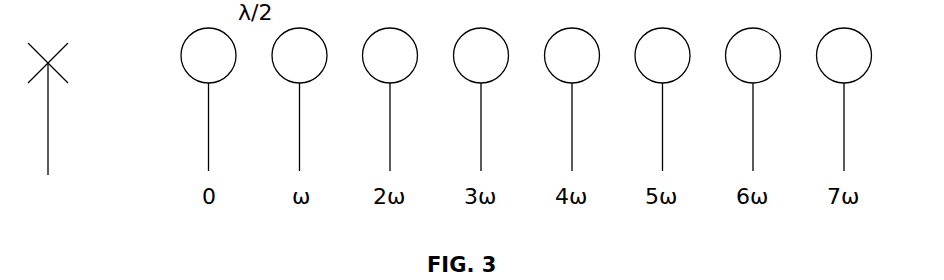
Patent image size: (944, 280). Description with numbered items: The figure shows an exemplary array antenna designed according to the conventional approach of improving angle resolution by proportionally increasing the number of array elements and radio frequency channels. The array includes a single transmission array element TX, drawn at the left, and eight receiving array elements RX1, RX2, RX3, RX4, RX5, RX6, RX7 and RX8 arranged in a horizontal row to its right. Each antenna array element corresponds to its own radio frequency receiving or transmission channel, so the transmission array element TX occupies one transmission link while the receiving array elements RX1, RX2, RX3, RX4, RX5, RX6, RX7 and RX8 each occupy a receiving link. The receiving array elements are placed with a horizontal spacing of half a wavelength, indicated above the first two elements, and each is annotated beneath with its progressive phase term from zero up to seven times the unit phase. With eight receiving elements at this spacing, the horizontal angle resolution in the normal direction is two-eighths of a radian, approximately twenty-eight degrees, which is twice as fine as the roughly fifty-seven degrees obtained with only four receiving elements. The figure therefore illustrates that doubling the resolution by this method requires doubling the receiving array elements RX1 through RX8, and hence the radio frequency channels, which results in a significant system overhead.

The transmission array element TX is at (60, 109).
The receiving array element RX1 is at (222, 99).
The receiving array element RX2 is at (313, 99).
The receiving array element RX3 is at (405, 99).
The receiving array element RX4 is at (496, 99).
The receiving array element RX5 is at (587, 99).
The receiving array element RX6 is at (680, 99).
The receiving array element RX7 is at (771, 99).
The receiving array element RX8 is at (860, 99).